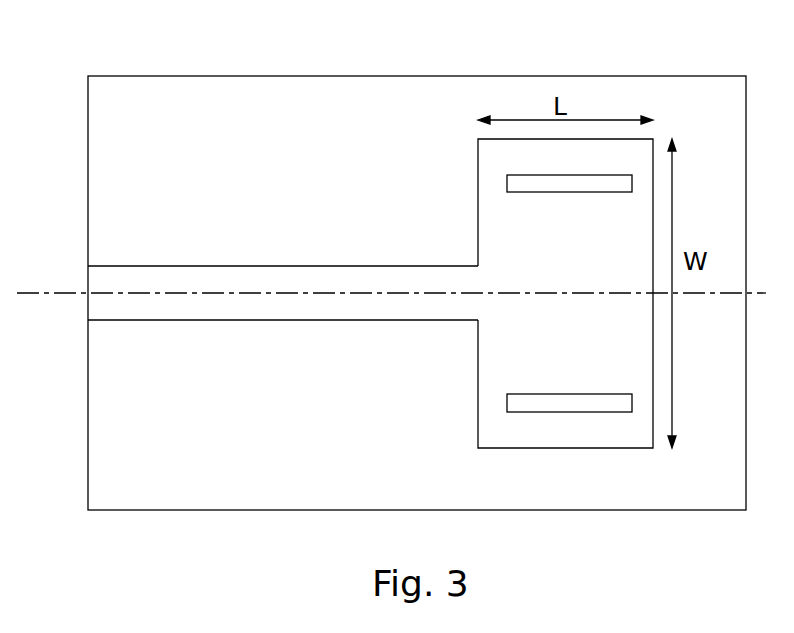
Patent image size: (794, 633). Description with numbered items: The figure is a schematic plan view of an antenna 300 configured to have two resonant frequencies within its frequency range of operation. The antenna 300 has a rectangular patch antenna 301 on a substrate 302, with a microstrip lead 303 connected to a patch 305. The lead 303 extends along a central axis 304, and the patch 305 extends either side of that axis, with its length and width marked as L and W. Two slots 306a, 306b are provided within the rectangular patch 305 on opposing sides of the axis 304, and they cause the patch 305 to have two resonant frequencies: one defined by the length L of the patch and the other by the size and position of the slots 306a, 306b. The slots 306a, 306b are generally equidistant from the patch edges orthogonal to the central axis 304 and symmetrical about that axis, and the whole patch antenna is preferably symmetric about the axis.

The antenna 300 is at (378, 267).
The rectangular patch antenna 301 is at (370, 284).
The substrate 302 is at (340, 412).
The microstrip lead 303 is at (180, 266).
The central axis 304 is at (65, 292).
The patch 305 is at (478, 177).
The first slot 306a is at (570, 194).
The second slot 306b is at (572, 393).